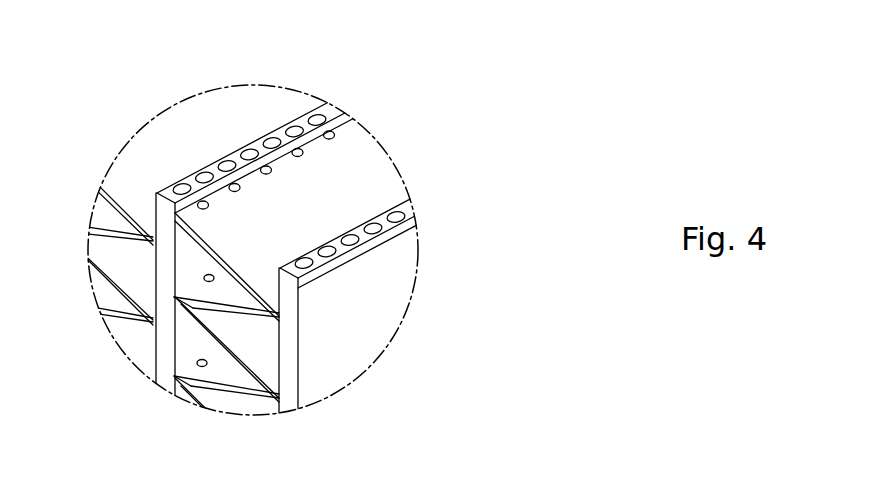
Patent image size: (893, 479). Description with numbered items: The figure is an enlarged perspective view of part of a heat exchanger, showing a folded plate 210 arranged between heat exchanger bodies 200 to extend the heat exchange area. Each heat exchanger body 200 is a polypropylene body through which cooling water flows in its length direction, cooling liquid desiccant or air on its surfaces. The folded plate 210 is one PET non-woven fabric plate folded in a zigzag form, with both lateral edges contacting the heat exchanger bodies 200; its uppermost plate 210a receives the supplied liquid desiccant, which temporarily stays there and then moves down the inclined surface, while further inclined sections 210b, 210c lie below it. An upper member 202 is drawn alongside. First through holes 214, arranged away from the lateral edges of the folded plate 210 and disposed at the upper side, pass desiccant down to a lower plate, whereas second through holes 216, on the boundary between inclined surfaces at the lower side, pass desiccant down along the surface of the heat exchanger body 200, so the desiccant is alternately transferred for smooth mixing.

The heat exchanger body 200 is at (398, 296).
The upper frame member 202 is at (398, 215).
The folded plate 210 is at (253, 234).
The uppermost plate 210a is at (299, 137).
The lateral member of frame 210b is at (197, 289).
The diagonal brace of frame 210c is at (212, 320).
The first through holes 214 is at (250, 151).
The second through holes 216 is at (266, 169).